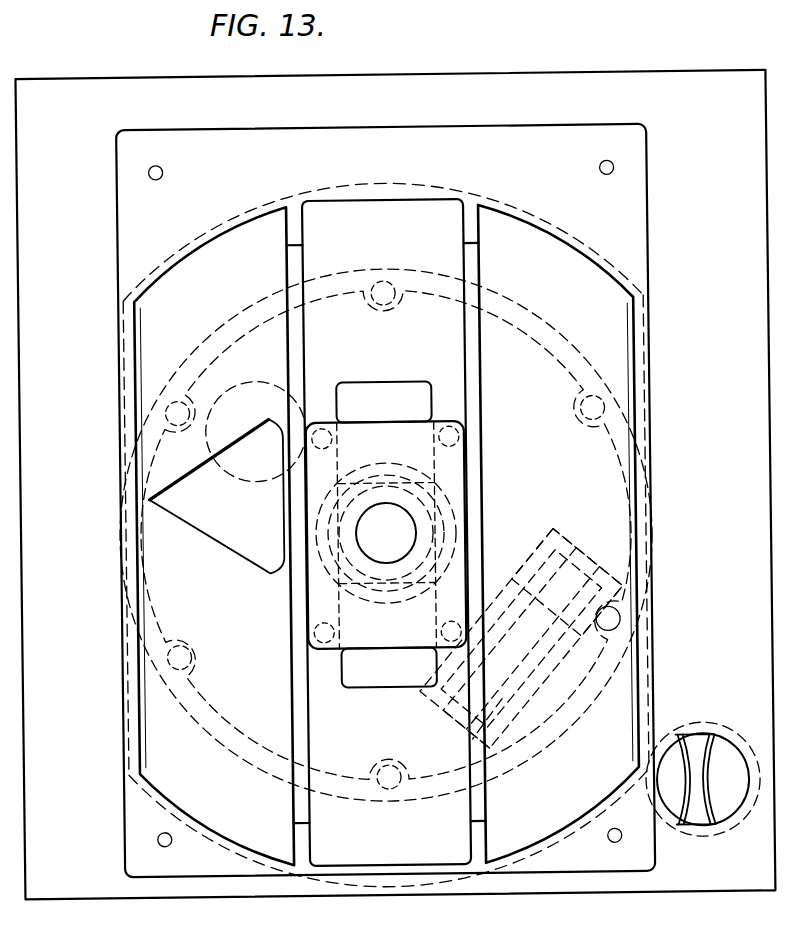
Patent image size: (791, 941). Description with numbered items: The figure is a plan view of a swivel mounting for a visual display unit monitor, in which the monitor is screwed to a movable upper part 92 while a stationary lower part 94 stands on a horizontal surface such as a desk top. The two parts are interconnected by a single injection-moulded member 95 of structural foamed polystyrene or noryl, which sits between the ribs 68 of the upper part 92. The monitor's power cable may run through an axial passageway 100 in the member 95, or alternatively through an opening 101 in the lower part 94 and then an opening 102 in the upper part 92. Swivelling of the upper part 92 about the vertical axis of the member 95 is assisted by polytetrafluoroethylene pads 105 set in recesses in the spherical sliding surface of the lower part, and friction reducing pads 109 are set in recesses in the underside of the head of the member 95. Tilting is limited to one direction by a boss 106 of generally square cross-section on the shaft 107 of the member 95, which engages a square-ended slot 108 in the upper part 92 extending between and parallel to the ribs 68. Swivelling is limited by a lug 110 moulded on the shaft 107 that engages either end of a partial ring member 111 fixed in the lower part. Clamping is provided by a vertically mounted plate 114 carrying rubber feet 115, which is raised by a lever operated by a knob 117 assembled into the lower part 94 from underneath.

The ribs 68 is at (298, 708).
The movable upper part 92 is at (457, 146).
The stationary lower part 94 is at (543, 87).
The member 95 is at (368, 432).
The axial passageway 100 is at (400, 510).
The opening 101 is at (245, 468).
The opening 102 is at (225, 538).
The polytetrafluoroethylene pads 105 is at (192, 646).
The boss 106 is at (490, 512).
The shaft 107 is at (420, 510).
The slot 108 is at (430, 399).
The friction reducing pads 109 is at (456, 429).
The lug 110 is at (392, 597).
The partial ring member 111 is at (318, 523).
The plate 114 is at (560, 563).
The rubber feet 115 is at (467, 708).
The knob 117 is at (707, 756).